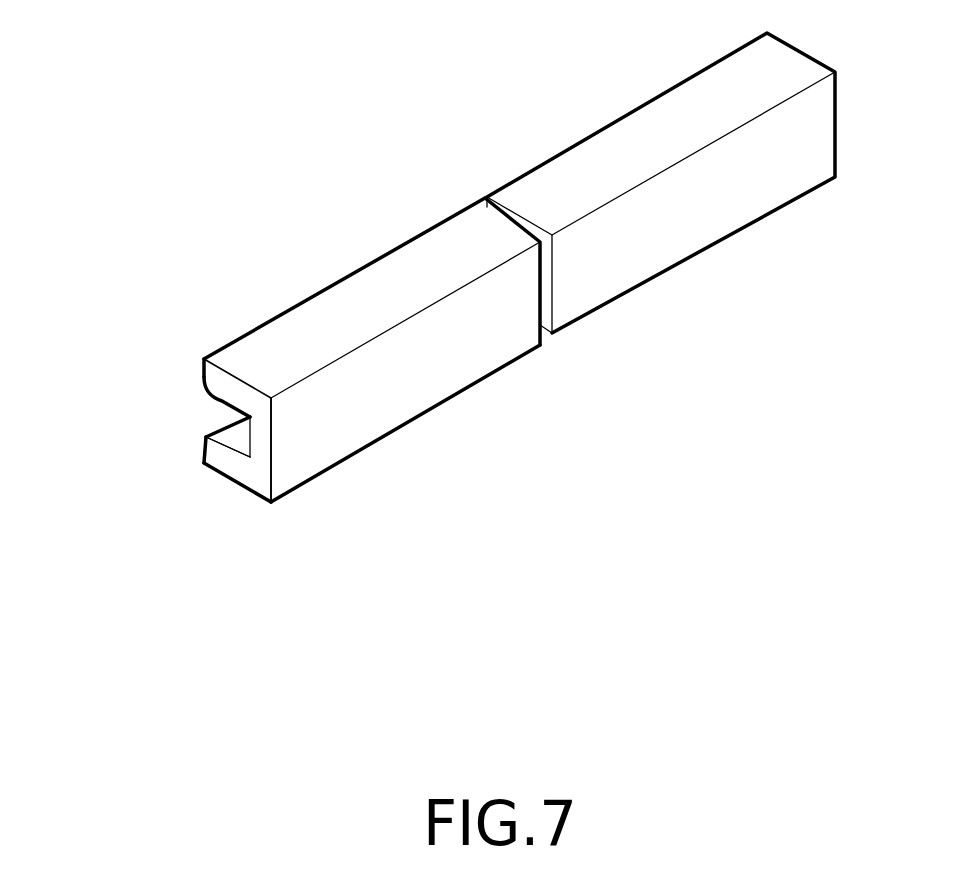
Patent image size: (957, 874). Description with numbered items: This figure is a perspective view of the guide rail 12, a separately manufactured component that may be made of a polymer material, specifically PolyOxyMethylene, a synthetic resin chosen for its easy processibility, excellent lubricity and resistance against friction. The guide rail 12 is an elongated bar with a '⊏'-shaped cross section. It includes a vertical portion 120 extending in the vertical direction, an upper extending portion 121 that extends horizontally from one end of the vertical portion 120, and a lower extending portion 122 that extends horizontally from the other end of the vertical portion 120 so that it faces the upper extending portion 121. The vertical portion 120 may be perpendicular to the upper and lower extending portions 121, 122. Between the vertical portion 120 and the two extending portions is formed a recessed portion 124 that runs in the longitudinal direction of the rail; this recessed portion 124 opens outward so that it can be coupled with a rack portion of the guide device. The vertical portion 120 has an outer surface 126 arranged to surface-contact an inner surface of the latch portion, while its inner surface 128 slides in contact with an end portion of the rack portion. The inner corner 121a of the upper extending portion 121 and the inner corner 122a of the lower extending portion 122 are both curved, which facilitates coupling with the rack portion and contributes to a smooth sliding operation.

The guide rail 12 is at (375, 208).
The vertical portion 120 is at (263, 442).
The upper extending portion 121 is at (238, 392).
The inner corner of the upper extending portion 121a is at (205, 380).
The lower extending portion 122 is at (254, 478).
The inner corner of the lower extending portion 122a is at (204, 440).
The recessed portion 124 is at (218, 418).
The outer surface 126 is at (450, 367).
The inner surface 128 is at (249, 444).